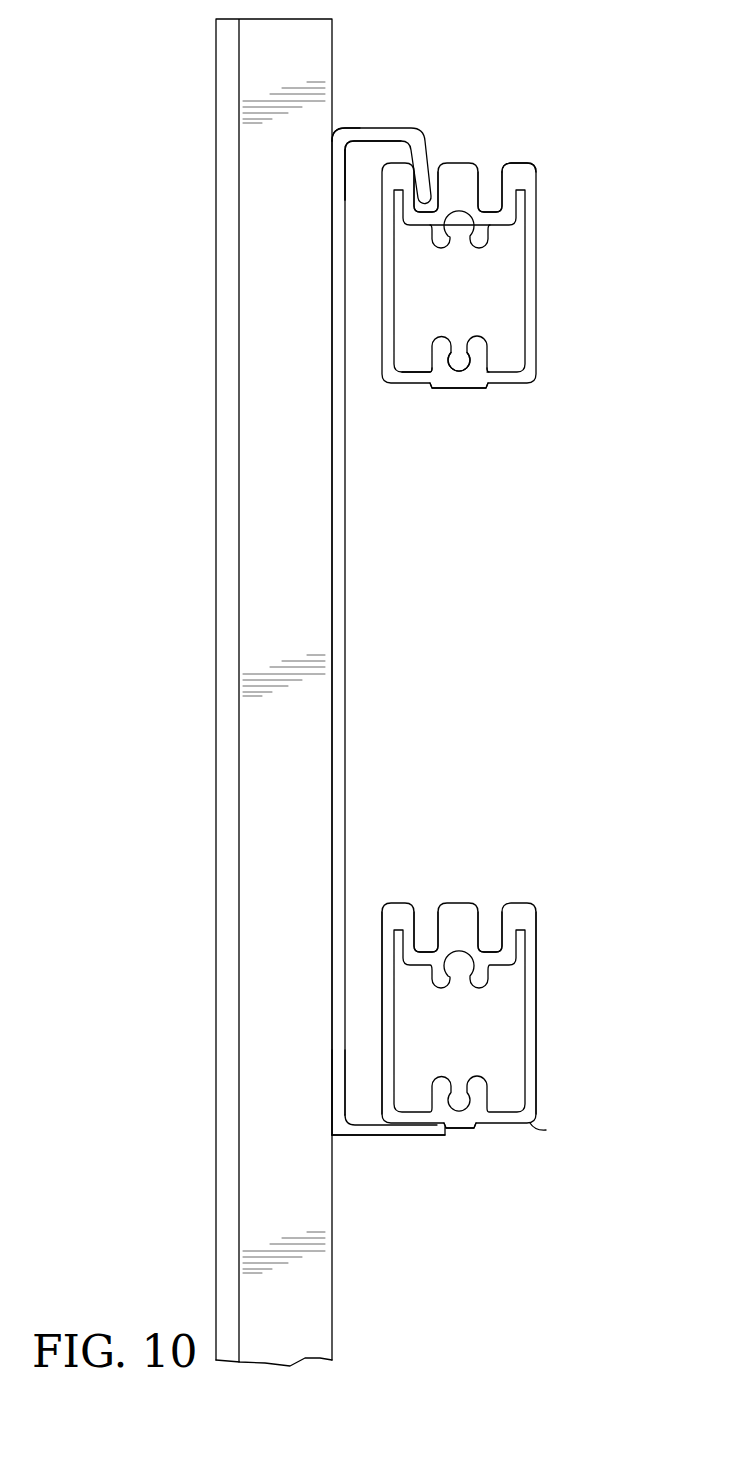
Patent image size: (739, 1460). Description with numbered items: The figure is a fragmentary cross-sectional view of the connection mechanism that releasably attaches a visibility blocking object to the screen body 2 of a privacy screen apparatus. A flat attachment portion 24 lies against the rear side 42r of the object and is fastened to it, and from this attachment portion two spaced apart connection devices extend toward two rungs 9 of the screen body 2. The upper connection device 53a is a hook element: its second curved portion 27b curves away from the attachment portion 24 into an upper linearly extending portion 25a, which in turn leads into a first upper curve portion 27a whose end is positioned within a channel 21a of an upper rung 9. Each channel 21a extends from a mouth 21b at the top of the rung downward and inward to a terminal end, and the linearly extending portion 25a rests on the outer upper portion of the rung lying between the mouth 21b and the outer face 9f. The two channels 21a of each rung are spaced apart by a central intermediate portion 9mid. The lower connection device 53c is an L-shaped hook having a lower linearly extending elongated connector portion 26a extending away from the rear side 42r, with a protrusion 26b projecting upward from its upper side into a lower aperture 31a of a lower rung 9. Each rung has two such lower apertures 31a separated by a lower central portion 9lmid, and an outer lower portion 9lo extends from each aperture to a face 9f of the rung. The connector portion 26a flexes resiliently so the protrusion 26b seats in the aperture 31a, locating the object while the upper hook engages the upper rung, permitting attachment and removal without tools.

The rear side 42r is at (333, 33).
The screen body 2 is at (356, 614).
The attachment portion 24 is at (338, 766).
The first upper curve portion 27a is at (415, 145).
The second curved portion 27b is at (346, 138).
The upper linearly extending portion 25a is at (355, 158).
The upper connection device 53a is at (440, 94).
The lower connection device 53c is at (312, 1065).
The lower linearly extending elongated connector portion 26a is at (363, 1136).
The protrusion 26b is at (437, 1122).
The rung 9 is at (538, 1002).
The outer face 9f is at (538, 947).
The outer lower portion 9lo is at (548, 1131).
The lower central portion 9lmid is at (476, 372).
The central intermediate portion 9mid is at (492, 170).
The channel 21a is at (492, 195).
The mouth 21b is at (503, 167).
The lower aperture 31a is at (437, 388).